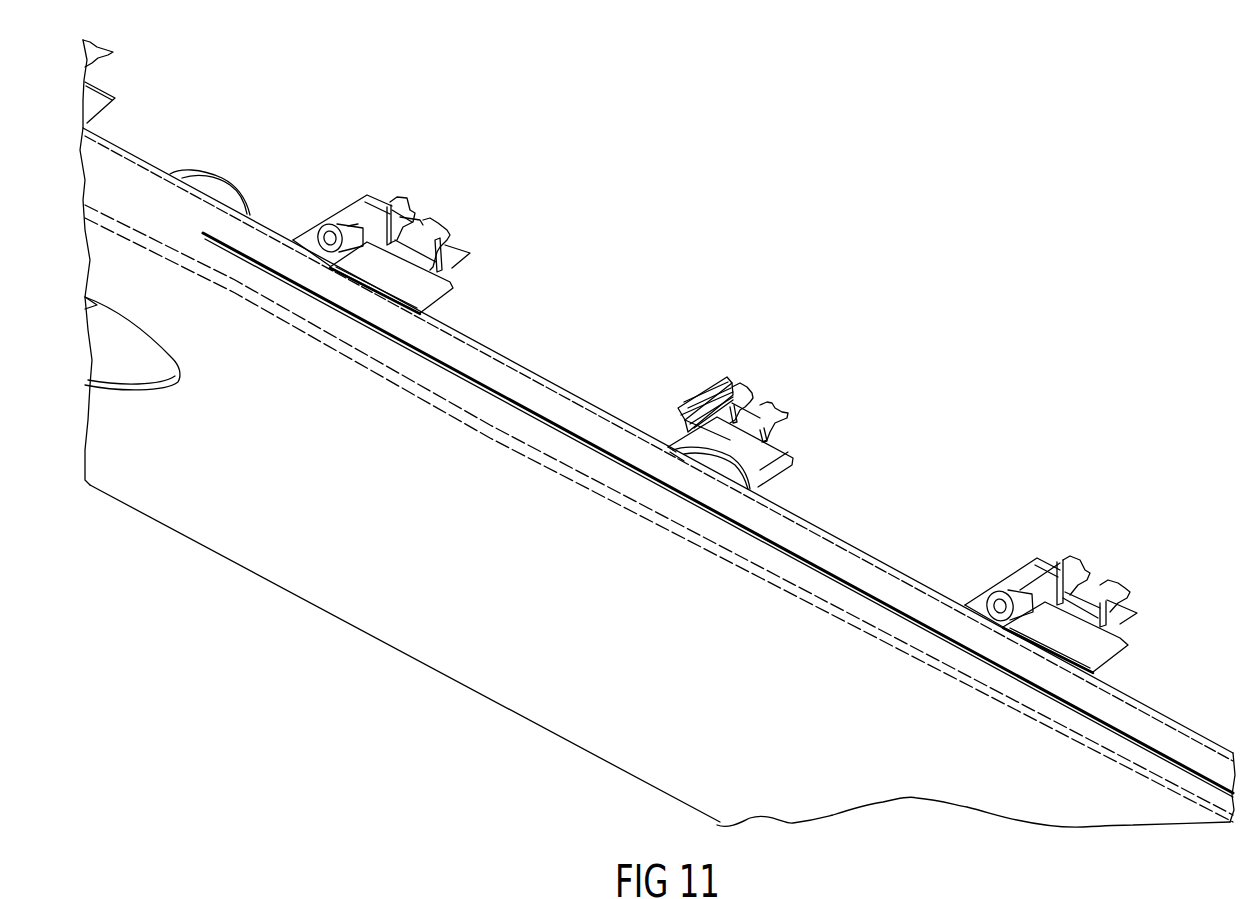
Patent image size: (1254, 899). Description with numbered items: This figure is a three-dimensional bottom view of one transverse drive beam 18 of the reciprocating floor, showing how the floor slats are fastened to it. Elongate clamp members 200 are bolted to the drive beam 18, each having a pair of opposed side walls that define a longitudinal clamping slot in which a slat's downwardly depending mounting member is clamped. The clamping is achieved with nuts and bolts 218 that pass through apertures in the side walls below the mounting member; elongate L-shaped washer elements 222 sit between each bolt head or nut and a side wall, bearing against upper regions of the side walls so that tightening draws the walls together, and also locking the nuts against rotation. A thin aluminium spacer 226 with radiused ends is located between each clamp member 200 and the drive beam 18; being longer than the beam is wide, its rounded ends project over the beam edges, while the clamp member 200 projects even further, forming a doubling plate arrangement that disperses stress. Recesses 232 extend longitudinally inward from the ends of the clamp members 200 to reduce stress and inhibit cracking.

The drive beam 18 is at (429, 566).
The clamp member 200 is at (760, 440).
The bolt 218 is at (322, 232).
The washer element 222 is at (390, 207).
The spacer 226 is at (200, 183).
The recess 232 is at (682, 402).